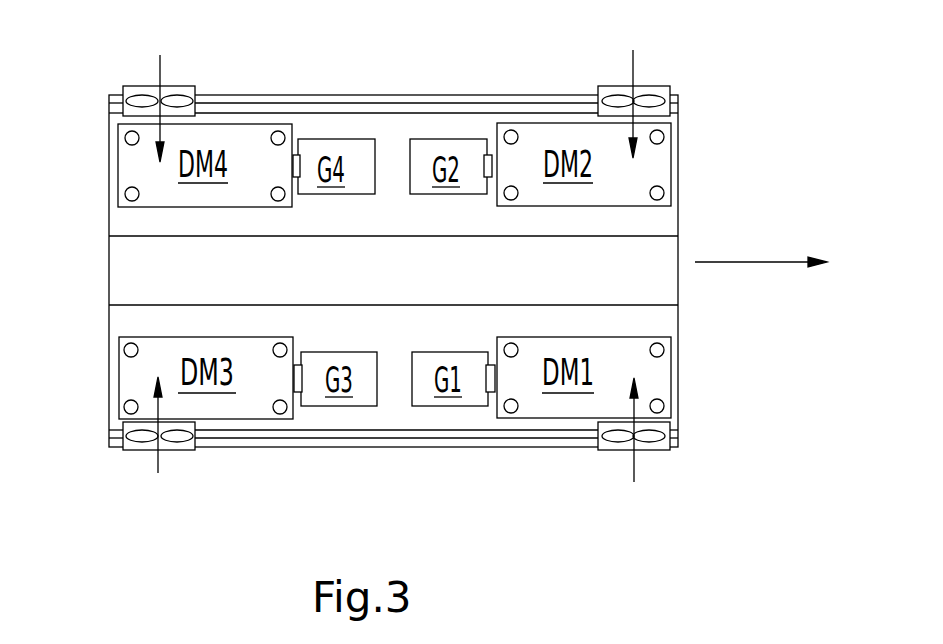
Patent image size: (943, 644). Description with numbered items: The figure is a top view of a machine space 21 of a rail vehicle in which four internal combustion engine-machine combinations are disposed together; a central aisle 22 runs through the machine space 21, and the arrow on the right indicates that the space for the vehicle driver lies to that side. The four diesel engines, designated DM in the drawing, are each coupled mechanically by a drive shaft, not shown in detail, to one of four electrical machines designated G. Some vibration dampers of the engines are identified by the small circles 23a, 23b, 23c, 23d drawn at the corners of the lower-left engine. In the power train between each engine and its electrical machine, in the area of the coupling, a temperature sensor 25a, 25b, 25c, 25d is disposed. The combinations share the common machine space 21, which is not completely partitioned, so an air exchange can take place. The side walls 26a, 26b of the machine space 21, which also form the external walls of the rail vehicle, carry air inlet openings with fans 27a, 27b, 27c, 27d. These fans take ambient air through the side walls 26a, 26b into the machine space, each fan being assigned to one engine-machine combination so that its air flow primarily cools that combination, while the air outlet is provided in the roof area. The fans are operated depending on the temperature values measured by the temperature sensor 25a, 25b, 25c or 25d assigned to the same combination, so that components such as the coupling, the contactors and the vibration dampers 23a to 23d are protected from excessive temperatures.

The machine space 21 is at (112, 319).
The central aisle 22 is at (363, 288).
The vibration damper 23a is at (273, 417).
The vibration damper 23b is at (288, 345).
The vibration damper 23c is at (137, 342).
The vibration damper 23d is at (122, 414).
The temperature sensor 25a is at (491, 392).
The temperature sensor 25b is at (490, 155).
The temperature sensor 25c is at (297, 392).
The temperature sensor 25d is at (294, 155).
The side wall 26a is at (569, 448).
The side wall 26b is at (565, 92).
The fan 27a is at (660, 455).
The fan 27b is at (658, 85).
The fan 27c is at (137, 457).
The fan 27d is at (178, 88).